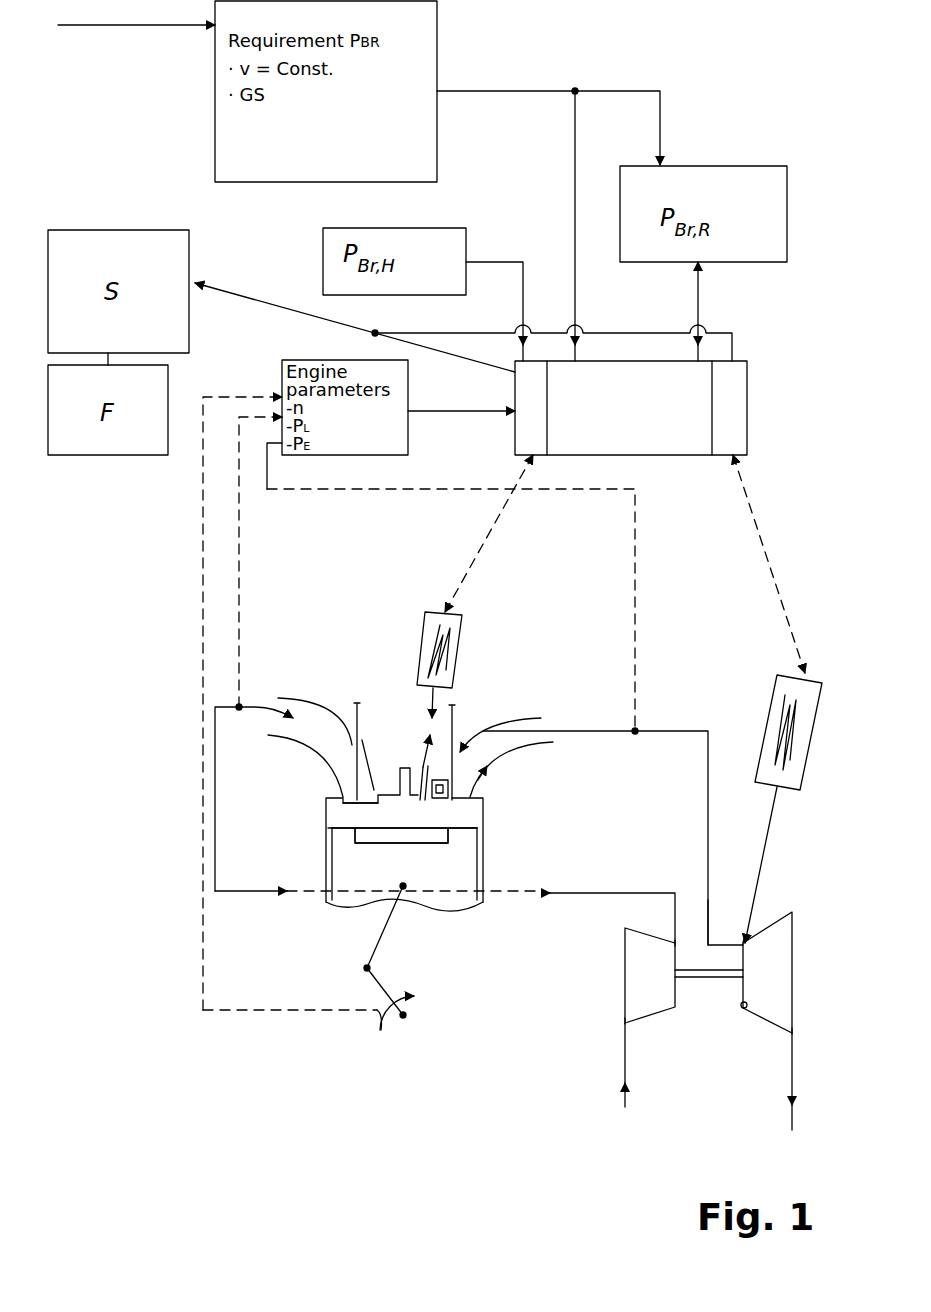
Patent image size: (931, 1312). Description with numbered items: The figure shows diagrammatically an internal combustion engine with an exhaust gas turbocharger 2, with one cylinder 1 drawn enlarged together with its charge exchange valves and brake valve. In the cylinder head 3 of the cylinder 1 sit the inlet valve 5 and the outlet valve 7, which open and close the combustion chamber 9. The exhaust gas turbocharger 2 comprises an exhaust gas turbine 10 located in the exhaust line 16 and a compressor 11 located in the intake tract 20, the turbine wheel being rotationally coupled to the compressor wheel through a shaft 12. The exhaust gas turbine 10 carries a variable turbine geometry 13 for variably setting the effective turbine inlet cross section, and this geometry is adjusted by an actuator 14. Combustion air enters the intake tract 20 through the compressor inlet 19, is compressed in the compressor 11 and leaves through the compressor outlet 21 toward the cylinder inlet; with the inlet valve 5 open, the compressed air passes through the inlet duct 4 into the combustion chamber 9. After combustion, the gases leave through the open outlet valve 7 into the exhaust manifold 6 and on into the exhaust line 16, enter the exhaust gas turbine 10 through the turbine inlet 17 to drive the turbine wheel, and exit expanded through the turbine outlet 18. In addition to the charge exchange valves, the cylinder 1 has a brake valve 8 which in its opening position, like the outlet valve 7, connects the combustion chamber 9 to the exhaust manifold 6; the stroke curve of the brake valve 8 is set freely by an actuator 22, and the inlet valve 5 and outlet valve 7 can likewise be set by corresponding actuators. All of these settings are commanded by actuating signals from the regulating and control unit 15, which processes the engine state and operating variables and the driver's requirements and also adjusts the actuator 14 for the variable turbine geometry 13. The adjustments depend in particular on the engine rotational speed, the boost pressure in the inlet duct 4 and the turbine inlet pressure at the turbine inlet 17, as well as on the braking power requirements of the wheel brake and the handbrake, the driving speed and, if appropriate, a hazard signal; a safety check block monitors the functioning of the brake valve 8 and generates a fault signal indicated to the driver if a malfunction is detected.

The cylinder 1 is at (362, 900).
The exhaust gas turbocharger 2 is at (704, 977).
The cylinder head 3 is at (383, 785).
The inlet duct 4 is at (310, 738).
The inlet valve 5 is at (363, 817).
The exhaust manifold 6 is at (493, 757).
The outlet valve 7 is at (455, 805).
The brake valve 8 is at (420, 805).
The combustion chamber 9 is at (330, 838).
The exhaust gas turbine 10 is at (780, 975).
The compressor 11 is at (640, 985).
The shaft 12 is at (699, 968).
The variable turbine geometry 13 is at (743, 1010).
The actuator 14 is at (800, 750).
The regulating and control unit 15 is at (633, 419).
The exhaust line 16 is at (678, 731).
The turbine inlet 17 is at (745, 935).
The turbine outlet 18 is at (790, 1030).
The compressor inlet 19 is at (625, 1020).
The intake tract 20 is at (600, 893).
The compressor outlet 21 is at (675, 940).
The actuator 22 is at (420, 640).